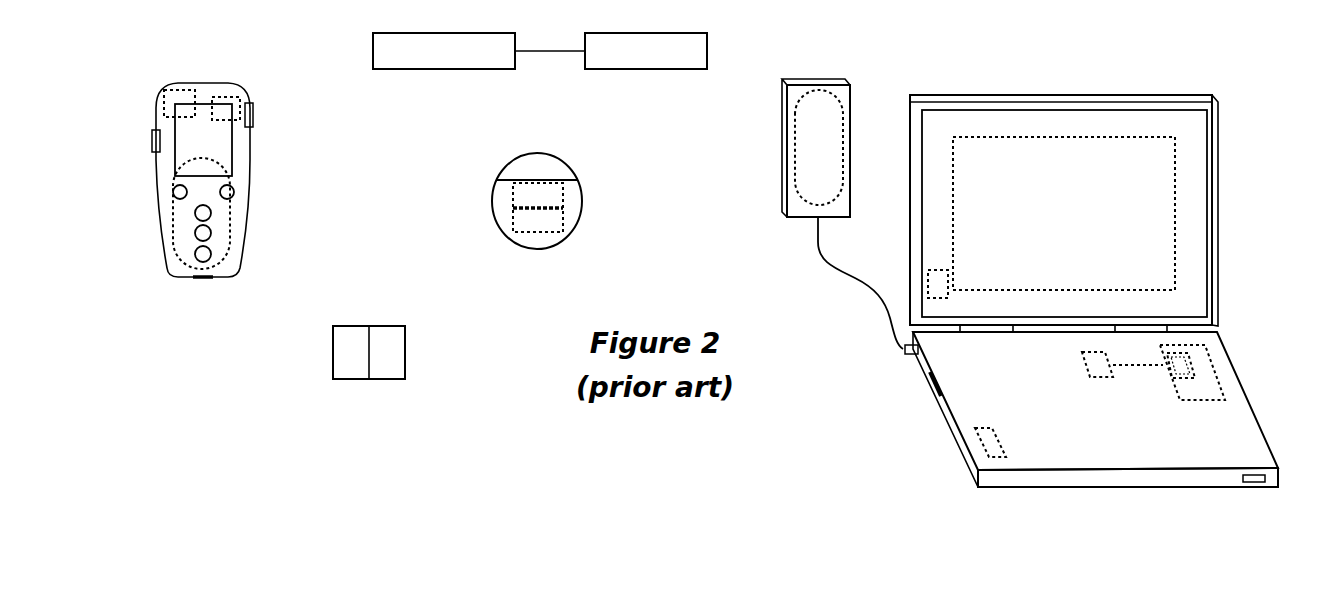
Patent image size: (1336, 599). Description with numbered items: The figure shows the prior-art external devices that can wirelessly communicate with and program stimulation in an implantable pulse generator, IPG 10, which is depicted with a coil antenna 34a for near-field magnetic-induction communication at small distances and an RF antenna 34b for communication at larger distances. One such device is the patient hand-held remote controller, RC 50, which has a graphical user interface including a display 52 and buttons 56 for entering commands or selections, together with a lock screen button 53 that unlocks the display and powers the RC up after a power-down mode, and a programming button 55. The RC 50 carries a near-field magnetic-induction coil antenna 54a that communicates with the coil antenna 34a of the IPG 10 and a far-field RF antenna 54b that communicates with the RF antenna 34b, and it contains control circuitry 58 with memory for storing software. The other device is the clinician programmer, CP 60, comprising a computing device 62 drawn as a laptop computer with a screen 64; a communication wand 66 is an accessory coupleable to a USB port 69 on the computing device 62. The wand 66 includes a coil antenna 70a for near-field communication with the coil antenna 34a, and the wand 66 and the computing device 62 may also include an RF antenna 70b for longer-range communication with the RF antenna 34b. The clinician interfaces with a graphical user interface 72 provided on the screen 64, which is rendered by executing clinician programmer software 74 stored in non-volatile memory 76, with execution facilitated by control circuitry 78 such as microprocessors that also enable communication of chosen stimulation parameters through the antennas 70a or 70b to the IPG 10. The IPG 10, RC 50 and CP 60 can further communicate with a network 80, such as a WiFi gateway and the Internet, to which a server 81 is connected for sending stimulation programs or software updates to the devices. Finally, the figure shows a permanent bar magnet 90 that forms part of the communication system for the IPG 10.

The implantable pulse generator 10 is at (586, 254).
The coil antenna 34a is at (563, 193).
The RF antenna 34b is at (563, 219).
The remote controller 50 is at (262, 66).
The display 52 is at (194, 151).
The lock screen button 53 is at (249, 126).
The near-field magnetic-induction coil antenna 54a is at (232, 217).
The far-field RF antenna 54b is at (243, 101).
The programming button 55 is at (152, 137).
The buttons 56 is at (198, 213).
The control circuitry 58 is at (165, 102).
The clinician programmer 60 is at (1222, 77).
The computing device 62 is at (955, 463).
The screen 64 is at (1194, 171).
The communication wand 66 is at (802, 62).
The USB port 69 is at (925, 388).
The coil antenna 70a is at (843, 104).
The RF antenna 70b is at (930, 271).
The clinician programmer graphical user interface 72 is at (1022, 139).
The clinician programmer software 74 is at (1183, 367).
The non-volatile memory 76 is at (1201, 397).
The control circuitry 78 is at (1088, 364).
The network 80 is at (444, 51).
The server 81 is at (646, 51).
The permanent bar magnet 90 is at (414, 312).